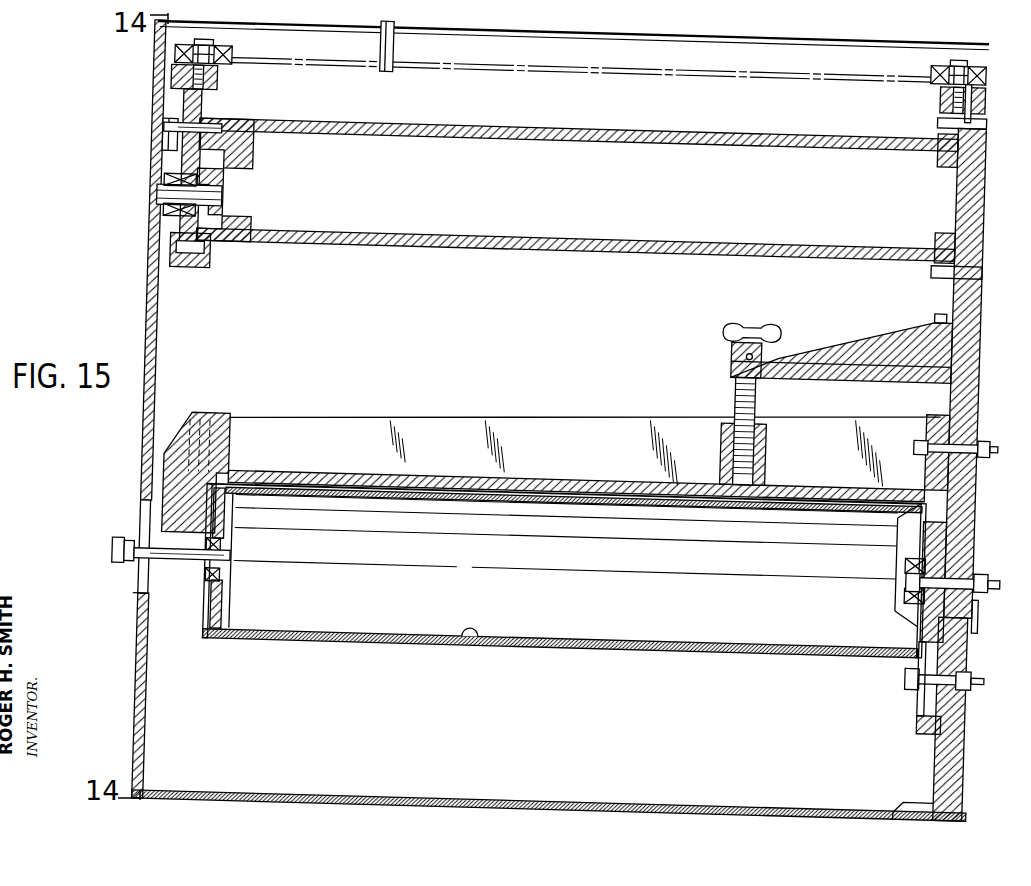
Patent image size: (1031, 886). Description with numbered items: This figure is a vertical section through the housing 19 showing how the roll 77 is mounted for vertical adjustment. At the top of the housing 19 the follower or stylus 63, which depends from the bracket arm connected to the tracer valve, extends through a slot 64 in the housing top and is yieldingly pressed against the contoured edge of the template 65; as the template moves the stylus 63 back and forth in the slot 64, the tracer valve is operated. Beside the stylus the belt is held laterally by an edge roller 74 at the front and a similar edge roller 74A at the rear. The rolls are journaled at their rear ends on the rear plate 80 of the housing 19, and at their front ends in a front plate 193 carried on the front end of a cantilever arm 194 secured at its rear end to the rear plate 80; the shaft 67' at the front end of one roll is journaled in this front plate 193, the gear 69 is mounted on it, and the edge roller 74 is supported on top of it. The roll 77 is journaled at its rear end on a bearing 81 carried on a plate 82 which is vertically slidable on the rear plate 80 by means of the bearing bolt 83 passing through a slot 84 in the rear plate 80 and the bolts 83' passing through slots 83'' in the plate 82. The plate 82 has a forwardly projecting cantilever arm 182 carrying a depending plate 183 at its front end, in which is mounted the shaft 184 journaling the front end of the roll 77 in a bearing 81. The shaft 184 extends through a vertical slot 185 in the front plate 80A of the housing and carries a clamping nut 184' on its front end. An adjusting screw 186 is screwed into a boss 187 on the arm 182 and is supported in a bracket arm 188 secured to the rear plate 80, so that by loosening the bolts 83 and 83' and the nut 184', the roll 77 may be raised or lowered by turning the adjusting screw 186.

The housing 19 is at (146, 271).
The follower or stylus 63 is at (395, 55).
The slot 64 is at (668, 38).
The edge roller 74 is at (232, 53).
The edge roller 74A is at (933, 76).
The front plate 193 is at (204, 107).
The shaft 67' is at (157, 129).
The gear 69 is at (218, 232).
The cantilever arm 194 is at (590, 252).
The depending plate 183 is at (192, 418).
The cantilever arm 182 is at (538, 426).
The bracket arm 188 is at (876, 331).
The boss 187 is at (769, 458).
The adjusting screw 186 is at (761, 407).
The template 65 is at (341, 640).
The roll 77 is at (478, 640).
The bearing 81 is at (233, 572).
The plate 82 is at (936, 549).
The bearing bolt 83 is at (968, 509).
The bolts 83' is at (966, 672).
The slots 83'' is at (899, 688).
The slot 84 is at (966, 620).
The vertical slot 185 is at (140, 503).
The rear plate 80 is at (965, 501).
The front plate 80A is at (134, 628).
The shaft 184 is at (216, 547).
The clamping nut 184' is at (100, 535).